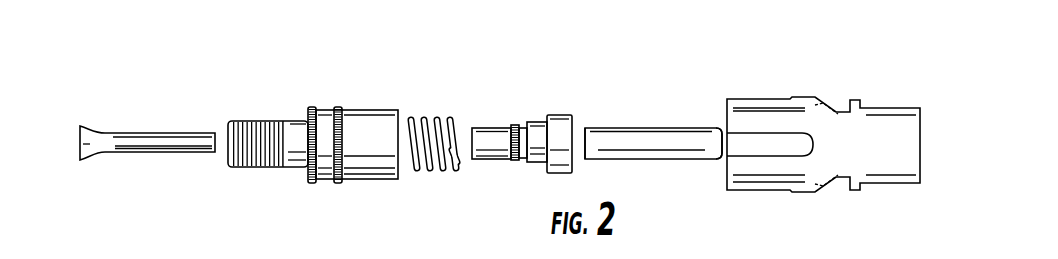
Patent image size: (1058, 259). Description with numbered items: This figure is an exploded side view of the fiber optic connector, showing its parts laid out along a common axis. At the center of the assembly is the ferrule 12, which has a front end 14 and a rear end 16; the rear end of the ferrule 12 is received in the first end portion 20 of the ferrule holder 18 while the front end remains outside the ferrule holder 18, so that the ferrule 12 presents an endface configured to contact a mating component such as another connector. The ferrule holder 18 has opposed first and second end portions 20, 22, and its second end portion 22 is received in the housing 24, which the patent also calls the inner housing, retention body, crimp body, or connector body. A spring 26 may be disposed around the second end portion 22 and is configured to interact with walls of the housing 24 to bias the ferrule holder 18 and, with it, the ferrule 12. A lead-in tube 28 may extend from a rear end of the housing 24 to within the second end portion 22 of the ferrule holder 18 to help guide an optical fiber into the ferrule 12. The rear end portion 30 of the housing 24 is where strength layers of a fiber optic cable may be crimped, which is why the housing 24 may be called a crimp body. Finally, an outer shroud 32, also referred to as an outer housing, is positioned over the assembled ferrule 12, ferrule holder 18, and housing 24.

The ferrule 12 is at (638, 127).
The front end 14 is at (722, 142).
The rear end 16 is at (586, 129).
The ferrule holder 18 is at (514, 125).
The first end portion 20 is at (553, 114).
The second end portion 22 is at (478, 128).
The housing 24 is at (322, 106).
The spring 26 is at (430, 172).
The lead-in tube 28 is at (148, 131).
The rear end portion 30 is at (229, 121).
The outer shroud 32 is at (897, 107).